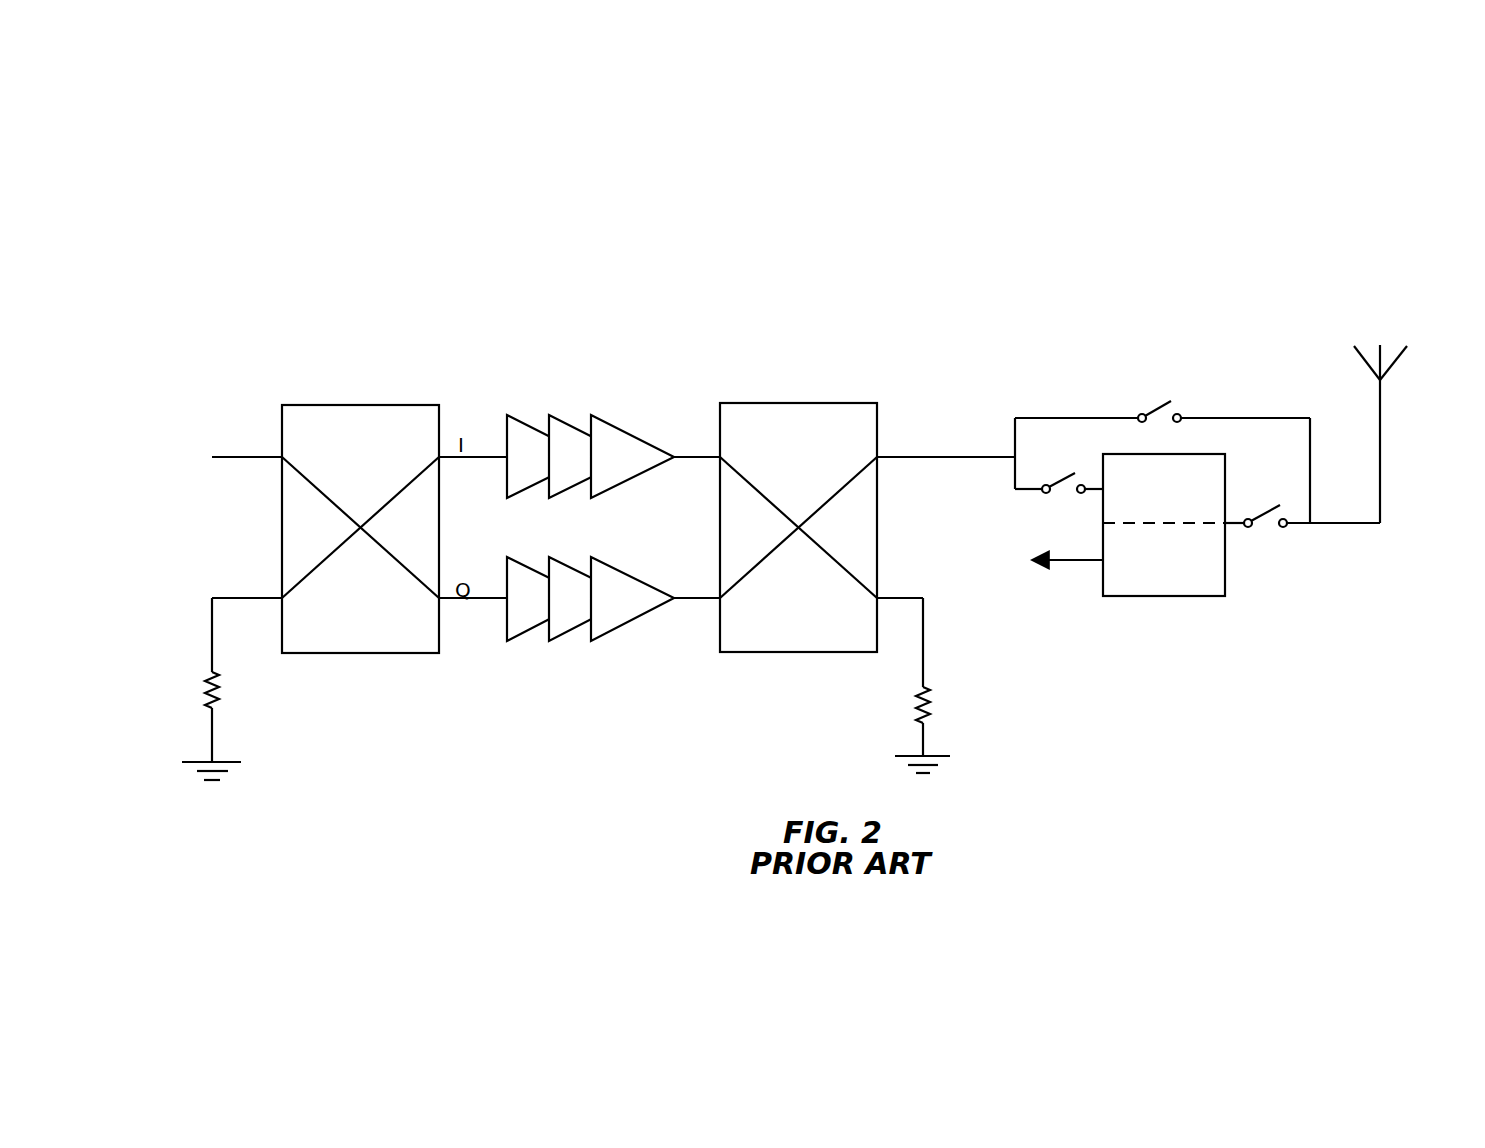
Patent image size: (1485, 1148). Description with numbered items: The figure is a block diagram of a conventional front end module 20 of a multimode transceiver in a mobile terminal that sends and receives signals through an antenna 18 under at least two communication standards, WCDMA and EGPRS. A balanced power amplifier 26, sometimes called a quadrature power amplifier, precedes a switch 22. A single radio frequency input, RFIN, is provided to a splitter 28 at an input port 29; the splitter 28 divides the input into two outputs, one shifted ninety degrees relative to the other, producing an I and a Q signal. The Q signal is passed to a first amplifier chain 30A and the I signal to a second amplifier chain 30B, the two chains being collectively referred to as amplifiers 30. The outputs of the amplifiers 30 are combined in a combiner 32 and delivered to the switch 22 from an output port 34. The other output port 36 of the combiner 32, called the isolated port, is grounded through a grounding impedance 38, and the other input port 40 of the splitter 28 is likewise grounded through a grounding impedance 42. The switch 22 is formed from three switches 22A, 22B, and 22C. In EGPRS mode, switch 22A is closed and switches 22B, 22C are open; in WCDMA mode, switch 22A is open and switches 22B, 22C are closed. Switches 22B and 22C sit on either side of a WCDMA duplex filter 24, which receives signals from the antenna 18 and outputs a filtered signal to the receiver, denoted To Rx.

The antenna 18 is at (1415, 355).
The front end module 20 is at (1024, 252).
The switch 22 is at (1268, 362).
The switch 22A is at (1161, 407).
The switch 22B is at (1065, 479).
The switch 22C is at (1270, 511).
The WCDMA duplex filter 24 is at (1226, 569).
The balanced power amplifier 26 is at (875, 365).
The splitter 28 is at (371, 658).
The input port 29 is at (280, 456).
The amplifiers 30 is at (599, 530).
The first amplifier chain 30A is at (613, 632).
The second amplifier chain 30B is at (613, 424).
The combiner 32 is at (814, 656).
The output port 34 is at (880, 456).
The other output port 36 is at (880, 597).
The grounding impedance 38 is at (930, 706).
The other input port 40 is at (280, 597).
The grounding impedance 42 is at (207, 692).